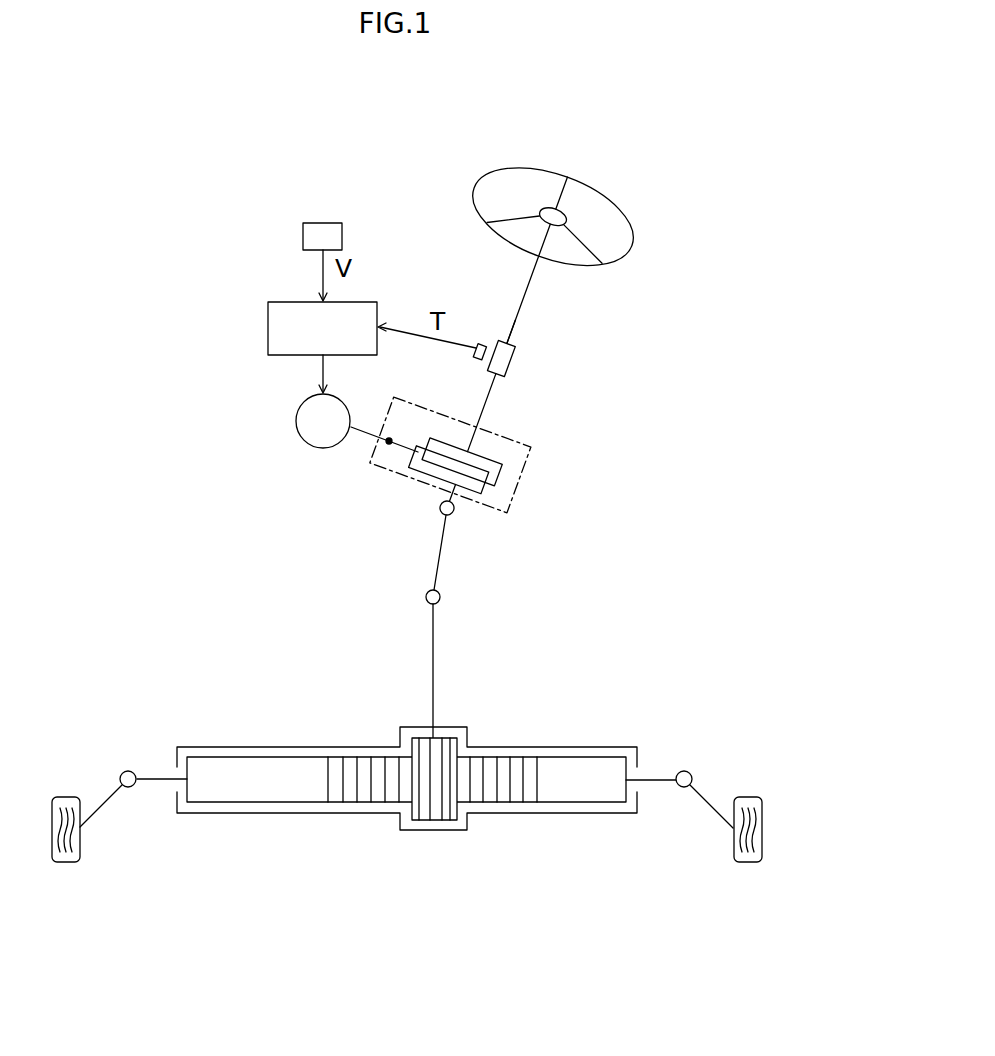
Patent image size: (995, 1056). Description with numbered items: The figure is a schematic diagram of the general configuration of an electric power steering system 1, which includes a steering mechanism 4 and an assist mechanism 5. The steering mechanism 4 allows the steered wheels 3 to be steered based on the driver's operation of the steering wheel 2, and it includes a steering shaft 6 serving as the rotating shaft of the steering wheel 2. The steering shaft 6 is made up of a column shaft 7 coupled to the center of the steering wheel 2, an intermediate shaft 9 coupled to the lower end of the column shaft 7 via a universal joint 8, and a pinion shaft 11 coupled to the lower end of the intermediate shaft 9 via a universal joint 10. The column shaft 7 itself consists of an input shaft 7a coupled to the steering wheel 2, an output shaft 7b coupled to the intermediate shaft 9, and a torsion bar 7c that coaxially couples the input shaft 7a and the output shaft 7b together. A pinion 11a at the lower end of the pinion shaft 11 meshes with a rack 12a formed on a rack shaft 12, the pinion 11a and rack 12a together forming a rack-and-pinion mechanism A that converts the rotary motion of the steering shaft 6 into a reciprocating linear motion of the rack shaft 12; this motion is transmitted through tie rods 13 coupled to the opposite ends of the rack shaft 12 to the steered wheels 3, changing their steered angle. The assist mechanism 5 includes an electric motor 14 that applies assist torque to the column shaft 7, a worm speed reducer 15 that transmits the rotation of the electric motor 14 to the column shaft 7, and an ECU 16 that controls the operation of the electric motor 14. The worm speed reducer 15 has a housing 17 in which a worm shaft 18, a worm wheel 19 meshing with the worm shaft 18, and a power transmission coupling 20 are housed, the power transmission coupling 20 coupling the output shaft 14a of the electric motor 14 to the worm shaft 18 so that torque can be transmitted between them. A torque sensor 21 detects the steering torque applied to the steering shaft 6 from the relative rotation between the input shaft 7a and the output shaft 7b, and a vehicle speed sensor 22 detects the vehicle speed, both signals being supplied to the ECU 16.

The electric power steering system 1 is at (656, 166).
The steering wheel 2 is at (518, 170).
The steered wheels 3 is at (63, 862).
The steering mechanism 4 is at (648, 220).
The assist mechanism 5 is at (283, 399).
The steering shaft 6 is at (537, 285).
The column shaft 7 is at (578, 327).
The input shaft 7a is at (513, 332).
The output shaft 7b is at (490, 383).
The torsion bar 7c is at (512, 358).
The universal joint 8 is at (455, 510).
The intermediate shaft 9 is at (441, 555).
The universal joint 10 is at (441, 598).
The pinion shaft 11 is at (441, 684).
The pinion 11a is at (433, 820).
The rack shaft 12 is at (505, 808).
The rack 12a is at (378, 800).
The tie rods 13 is at (105, 808).
The electric motor 14 is at (315, 448).
The output shaft 14a is at (363, 433).
The worm speed reducer 15 is at (523, 511).
The electronic control unit (ECU) 16 is at (268, 327).
The housing 17 is at (517, 441).
The worm shaft 18 is at (481, 456).
The worm wheel 19 is at (495, 483).
The power transmission coupling 20 is at (403, 450).
The torque sensor 21 is at (482, 340).
The vehicle speed sensor 22 is at (303, 235).
The rack-and-pinion mechanism A is at (469, 845).